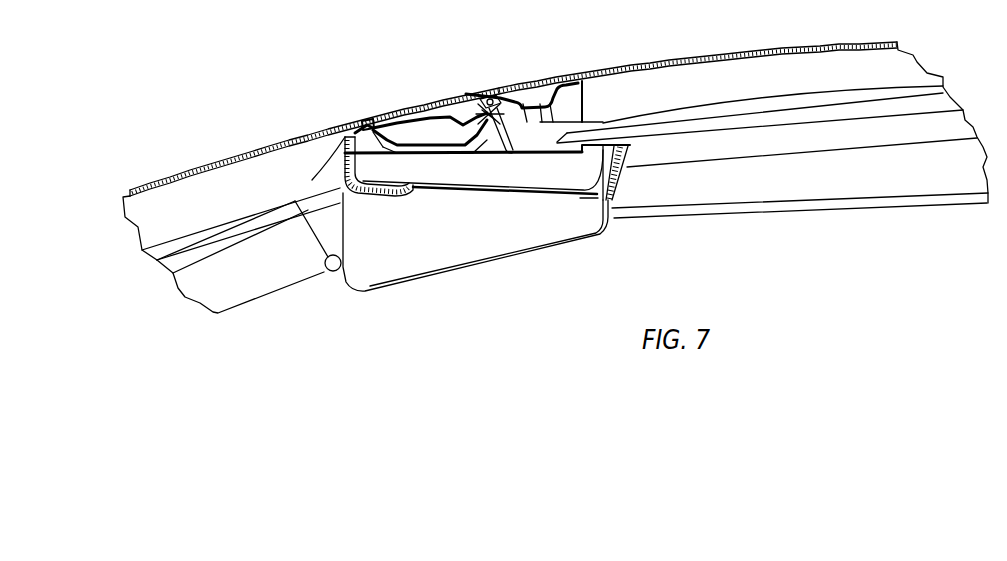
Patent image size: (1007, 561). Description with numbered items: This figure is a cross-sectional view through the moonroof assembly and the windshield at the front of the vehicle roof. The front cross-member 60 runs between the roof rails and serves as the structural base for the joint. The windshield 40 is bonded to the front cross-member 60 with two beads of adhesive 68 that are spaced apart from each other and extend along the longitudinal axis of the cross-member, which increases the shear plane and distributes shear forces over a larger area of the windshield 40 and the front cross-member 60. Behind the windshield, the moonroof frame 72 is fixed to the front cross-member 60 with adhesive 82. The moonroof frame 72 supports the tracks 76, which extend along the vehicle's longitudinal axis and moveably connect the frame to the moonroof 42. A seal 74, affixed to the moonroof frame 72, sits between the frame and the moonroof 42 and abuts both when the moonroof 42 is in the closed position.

The windshield 40 is at (290, 139).
The moonroof 42 is at (657, 62).
The front cross-member 60 is at (422, 116).
The adhesive 68 is at (364, 123).
The moonroof frame 72 is at (537, 140).
The seal 74 is at (488, 98).
The track 76 is at (730, 160).
The adhesive 82 is at (500, 110).